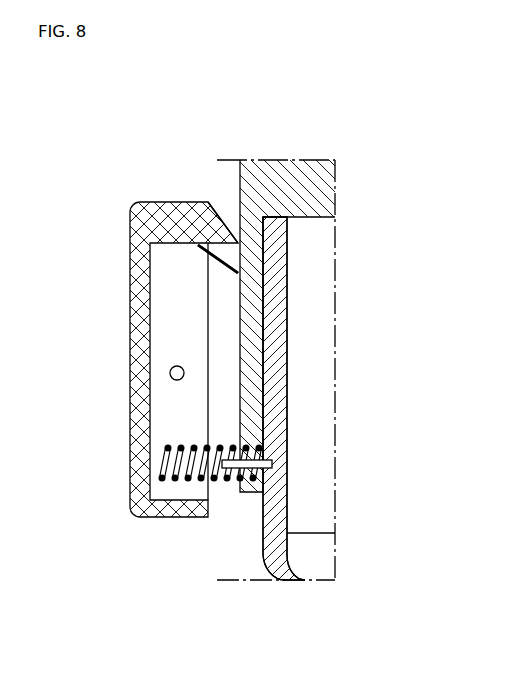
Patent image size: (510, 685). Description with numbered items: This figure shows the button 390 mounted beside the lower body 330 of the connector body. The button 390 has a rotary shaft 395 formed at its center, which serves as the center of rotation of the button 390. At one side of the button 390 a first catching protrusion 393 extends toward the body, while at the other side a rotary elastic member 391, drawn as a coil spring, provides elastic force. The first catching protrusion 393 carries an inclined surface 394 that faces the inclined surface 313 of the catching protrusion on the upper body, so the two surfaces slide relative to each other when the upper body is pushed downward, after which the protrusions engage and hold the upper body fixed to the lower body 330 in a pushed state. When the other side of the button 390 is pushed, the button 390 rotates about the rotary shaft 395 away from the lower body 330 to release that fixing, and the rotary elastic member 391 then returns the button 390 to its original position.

The inclined surface 313 is at (238, 273).
The lower body 330 is at (317, 451).
The button 390 is at (138, 372).
The rotary elastic member 391 is at (188, 483).
The first catching protrusion 393 is at (208, 202).
The inclined surface 394 is at (220, 217).
The rotary shaft 395 is at (172, 366).